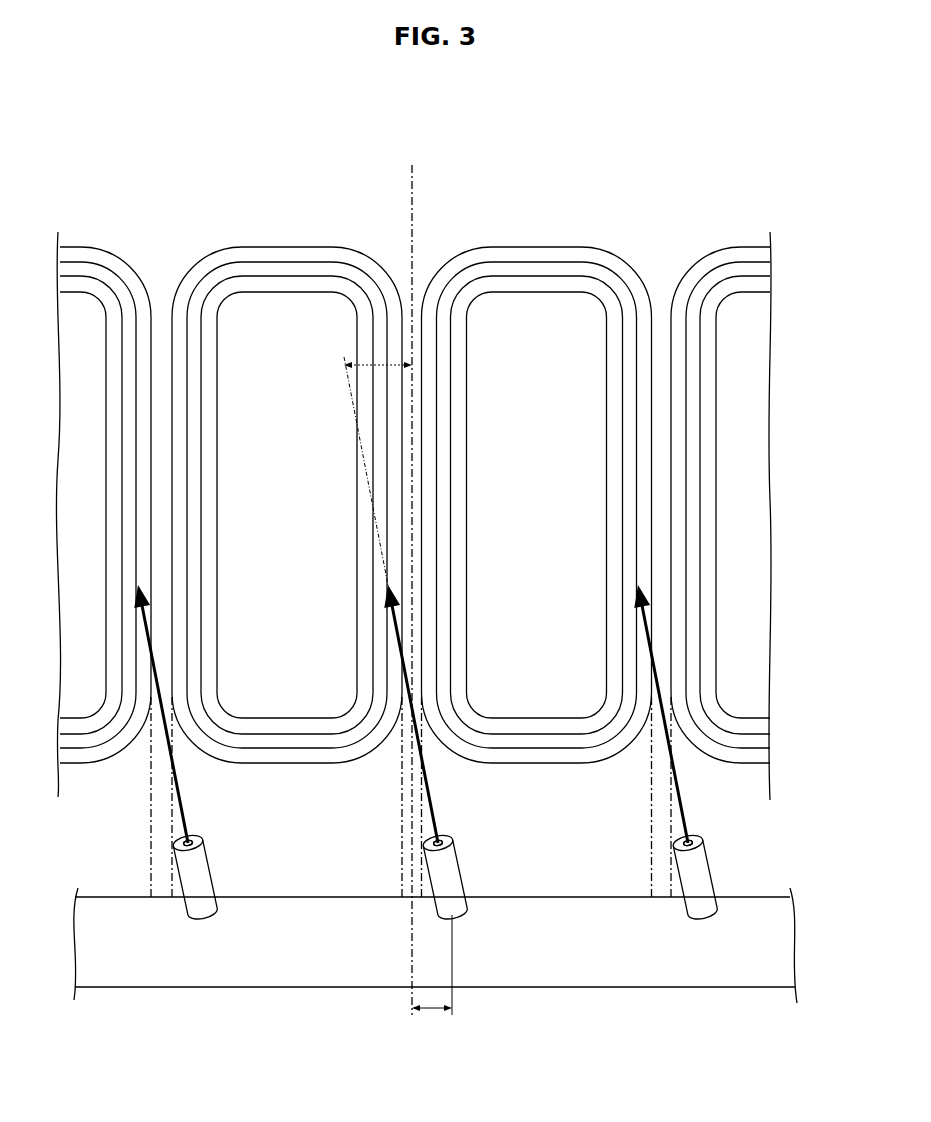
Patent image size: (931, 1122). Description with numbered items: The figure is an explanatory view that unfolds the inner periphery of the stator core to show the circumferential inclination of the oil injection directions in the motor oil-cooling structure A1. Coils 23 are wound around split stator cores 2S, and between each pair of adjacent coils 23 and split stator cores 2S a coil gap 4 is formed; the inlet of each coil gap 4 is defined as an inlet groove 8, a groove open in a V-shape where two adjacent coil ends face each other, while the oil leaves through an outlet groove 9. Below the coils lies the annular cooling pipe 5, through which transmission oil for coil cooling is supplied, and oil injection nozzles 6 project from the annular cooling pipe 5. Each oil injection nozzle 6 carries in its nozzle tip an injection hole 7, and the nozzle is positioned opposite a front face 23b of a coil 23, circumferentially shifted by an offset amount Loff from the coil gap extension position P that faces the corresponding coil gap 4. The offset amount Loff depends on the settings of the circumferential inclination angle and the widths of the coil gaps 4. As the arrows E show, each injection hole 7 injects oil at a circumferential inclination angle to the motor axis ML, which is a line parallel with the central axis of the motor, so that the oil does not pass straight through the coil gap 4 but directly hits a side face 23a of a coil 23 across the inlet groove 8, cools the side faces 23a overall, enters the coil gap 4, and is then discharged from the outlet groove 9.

The coil 23 is at (450, 481).
The side face 23a is at (130, 457).
The front face 23b is at (70, 742).
The outlet groove 9 is at (422, 272).
The coil gap 4 is at (415, 374).
The motor axis ML is at (410, 170).
The split stator core 2S is at (64, 523).
The arrow E is at (158, 663).
The inlet groove 8 is at (177, 737).
The injection hole 7 is at (198, 838).
The oil injection nozzle 6 is at (190, 880).
The annular cooling pipe 5 is at (540, 943).
The motor oil-cooling structure A1 is at (811, 856).
The coil gap extension position P is at (412, 942).
The offset amount Loff is at (432, 1012).